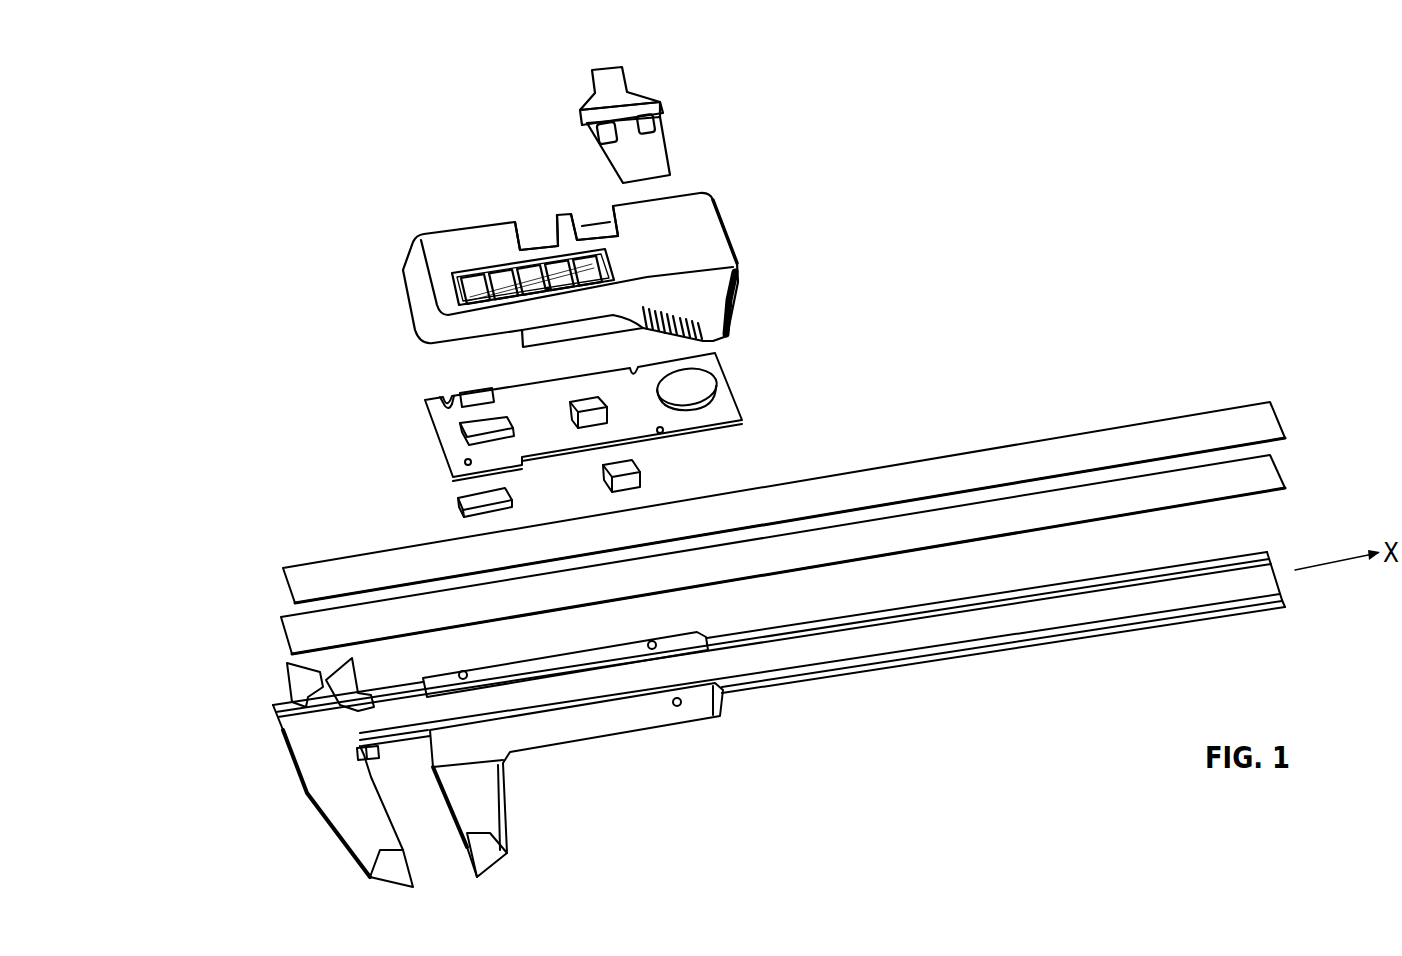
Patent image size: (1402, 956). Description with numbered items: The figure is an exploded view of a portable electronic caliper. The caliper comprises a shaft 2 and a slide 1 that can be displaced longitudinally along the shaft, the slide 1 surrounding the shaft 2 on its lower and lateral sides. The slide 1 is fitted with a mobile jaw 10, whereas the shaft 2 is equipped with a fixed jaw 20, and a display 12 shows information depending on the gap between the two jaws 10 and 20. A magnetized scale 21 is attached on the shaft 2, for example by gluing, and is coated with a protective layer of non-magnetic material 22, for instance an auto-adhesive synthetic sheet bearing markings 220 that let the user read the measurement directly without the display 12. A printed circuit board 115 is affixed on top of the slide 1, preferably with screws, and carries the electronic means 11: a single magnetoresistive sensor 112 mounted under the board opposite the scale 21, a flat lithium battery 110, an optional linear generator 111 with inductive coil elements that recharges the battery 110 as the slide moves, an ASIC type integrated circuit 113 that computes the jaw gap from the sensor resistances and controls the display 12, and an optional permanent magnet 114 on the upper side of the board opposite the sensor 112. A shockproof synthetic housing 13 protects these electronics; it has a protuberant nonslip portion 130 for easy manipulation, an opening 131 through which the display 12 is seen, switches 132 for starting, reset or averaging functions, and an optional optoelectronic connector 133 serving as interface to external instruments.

The slide 1 is at (573, 754).
The shaft 2 is at (779, 719).
The mobile jaw 10 is at (488, 800).
The electronic means 11 is at (558, 430).
The display 12 is at (477, 233).
The housing 13 is at (584, 207).
The fixed jaw 20 is at (350, 820).
The magnetized scale 21 is at (298, 632).
The protective layer of non-magnetic material 22 is at (755, 502).
The battery 110 is at (705, 388).
The linear generator 111 is at (632, 468).
The magnetoresistive sensor 112 is at (465, 503).
The ASIC type integrated circuit 113 is at (583, 412).
The permanent magnet 114 is at (463, 440).
The printed circuit board 115 is at (433, 412).
The protuberant nonslip portion 130 is at (732, 316).
The opening 131 is at (462, 296).
The switches 132 is at (600, 218).
The optoelectronic connector 133 is at (643, 153).
The markings 220 is at (328, 575).